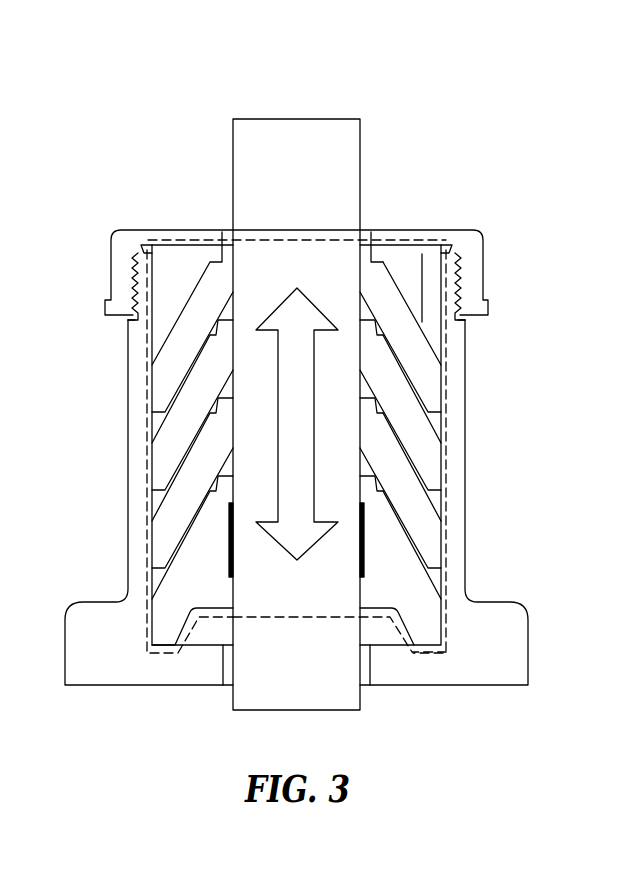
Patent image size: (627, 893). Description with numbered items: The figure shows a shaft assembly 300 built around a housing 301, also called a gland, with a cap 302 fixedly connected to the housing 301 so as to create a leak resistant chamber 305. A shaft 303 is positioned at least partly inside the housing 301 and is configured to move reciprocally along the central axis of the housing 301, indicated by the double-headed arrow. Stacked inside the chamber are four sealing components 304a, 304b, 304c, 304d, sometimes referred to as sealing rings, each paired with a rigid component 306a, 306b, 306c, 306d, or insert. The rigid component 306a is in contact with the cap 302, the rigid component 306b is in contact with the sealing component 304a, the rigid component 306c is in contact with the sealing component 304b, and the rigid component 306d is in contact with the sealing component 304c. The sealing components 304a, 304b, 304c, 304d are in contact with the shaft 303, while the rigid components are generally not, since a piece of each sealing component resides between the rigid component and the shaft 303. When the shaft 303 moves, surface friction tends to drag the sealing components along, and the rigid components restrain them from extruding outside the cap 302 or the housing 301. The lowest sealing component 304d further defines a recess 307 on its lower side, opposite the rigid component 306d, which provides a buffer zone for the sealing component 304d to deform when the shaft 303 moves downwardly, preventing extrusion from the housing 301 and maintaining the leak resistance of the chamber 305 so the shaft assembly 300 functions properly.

The shaft assembly 300 is at (443, 109).
The housing 301 is at (104, 608).
The cap 302 is at (122, 240).
The shaft 303 is at (245, 172).
The sealing component 304a is at (433, 383).
The sealing component 304b is at (433, 463).
The sealing component 304c is at (433, 540).
The sealing component 304d is at (430, 622).
The leak resistant chamber 305 is at (439, 663).
The rigid component 306a is at (385, 247).
The rigid component 306b is at (385, 337).
The rigid component 306c is at (385, 414).
The rigid component 306d is at (385, 491).
The recess 307 is at (209, 624).